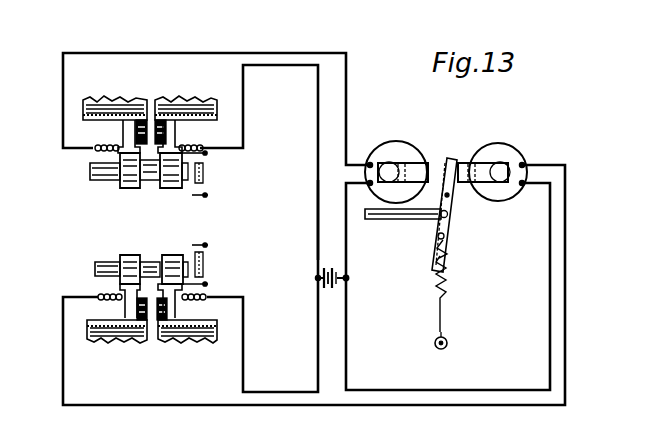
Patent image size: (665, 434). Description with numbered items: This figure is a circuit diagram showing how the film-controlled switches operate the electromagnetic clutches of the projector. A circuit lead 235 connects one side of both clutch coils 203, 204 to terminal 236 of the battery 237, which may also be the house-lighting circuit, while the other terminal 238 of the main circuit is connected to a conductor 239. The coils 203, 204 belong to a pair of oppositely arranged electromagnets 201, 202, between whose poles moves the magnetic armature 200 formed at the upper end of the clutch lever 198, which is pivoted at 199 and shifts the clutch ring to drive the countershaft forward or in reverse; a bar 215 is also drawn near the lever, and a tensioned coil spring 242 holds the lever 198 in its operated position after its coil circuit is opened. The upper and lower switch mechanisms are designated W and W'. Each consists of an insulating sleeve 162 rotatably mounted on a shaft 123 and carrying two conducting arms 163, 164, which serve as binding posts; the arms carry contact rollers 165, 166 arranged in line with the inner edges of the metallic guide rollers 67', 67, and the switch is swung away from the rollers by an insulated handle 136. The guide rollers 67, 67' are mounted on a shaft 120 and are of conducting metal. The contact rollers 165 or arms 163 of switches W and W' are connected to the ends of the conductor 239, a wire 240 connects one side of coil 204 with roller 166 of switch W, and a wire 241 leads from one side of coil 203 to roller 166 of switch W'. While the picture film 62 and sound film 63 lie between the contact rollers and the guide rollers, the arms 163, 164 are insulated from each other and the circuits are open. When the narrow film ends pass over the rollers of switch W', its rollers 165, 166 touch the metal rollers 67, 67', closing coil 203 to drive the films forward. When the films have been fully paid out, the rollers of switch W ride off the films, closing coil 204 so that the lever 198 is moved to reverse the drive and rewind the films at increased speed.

The wire 240 is at (347, 83).
The wire 241 is at (276, 406).
The shaft 120 is at (524, 425).
The sound film 63 is at (215, 119).
The conductor 239 is at (318, 226).
The circuit lead 235 is at (347, 328).
The terminal 238 is at (317, 280).
The terminal 236 is at (349, 281).
The battery 237 is at (330, 286).
The coil 204 is at (382, 150).
The electromagnet 202 is at (410, 160).
The coil 203 is at (506, 158).
The electromagnet 201 is at (468, 160).
The magnetic armature 200 is at (452, 156).
The lever 198 is at (452, 240).
The pivot 199 is at (438, 238).
The bar 215 is at (366, 222).
The coil spring 242 is at (449, 290).
The guide roller 67 is at (111, 223).
The guide roller 67' is at (192, 227).
The picture film 62 is at (95, 124).
The contact roller 166 is at (143, 122).
The contact roller 165 is at (158, 122).
The upper switch mechanism W is at (139, 136).
The lower switch mechanism W' is at (140, 277).
The shaft 123 is at (90, 171).
The conducting arm 164 is at (122, 187).
The insulating sleeve 162 is at (150, 182).
The conducting arm 163 is at (170, 184).
The insulated handle 136 is at (208, 285).